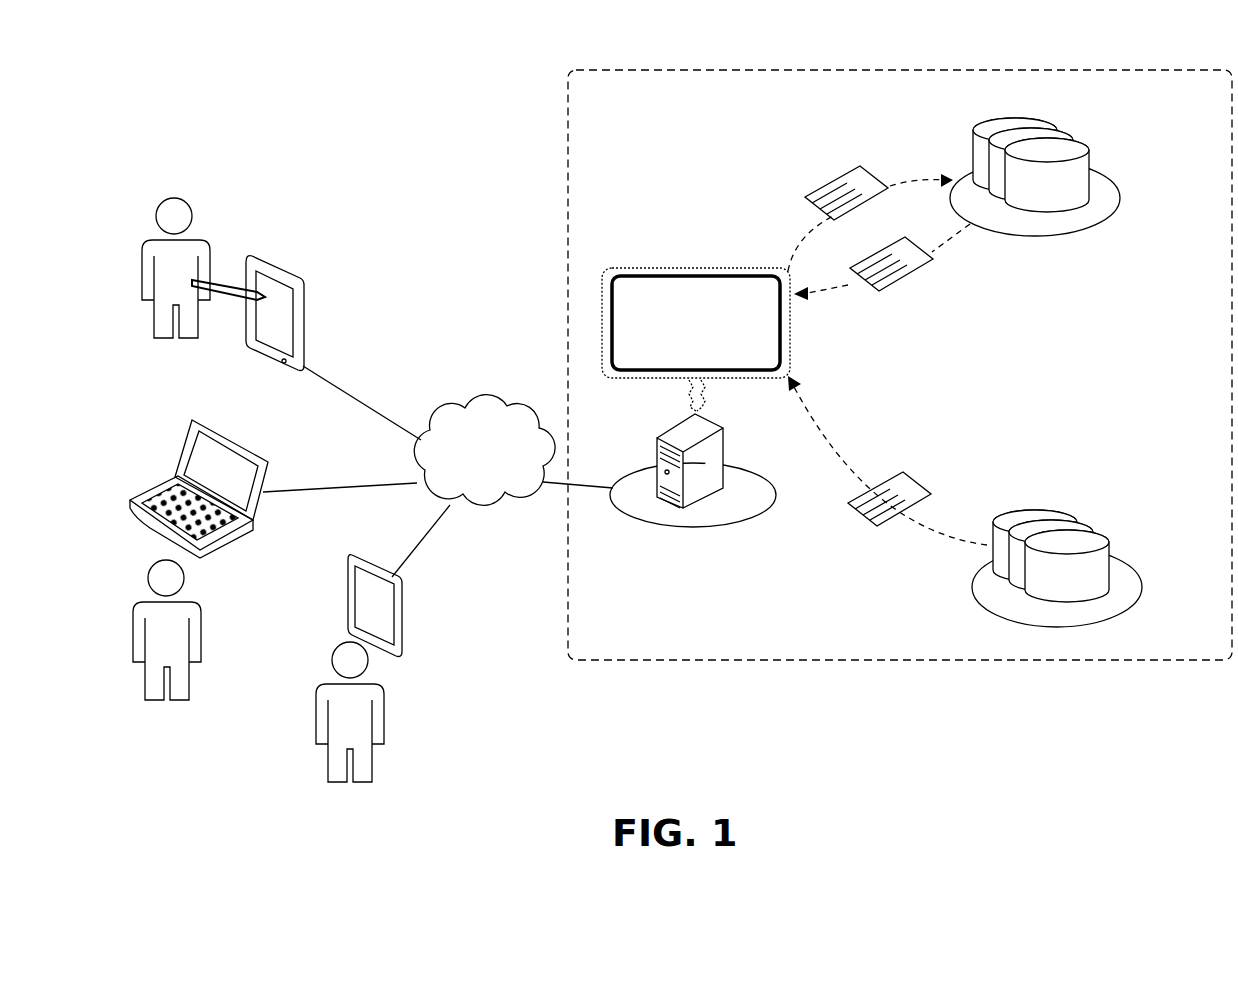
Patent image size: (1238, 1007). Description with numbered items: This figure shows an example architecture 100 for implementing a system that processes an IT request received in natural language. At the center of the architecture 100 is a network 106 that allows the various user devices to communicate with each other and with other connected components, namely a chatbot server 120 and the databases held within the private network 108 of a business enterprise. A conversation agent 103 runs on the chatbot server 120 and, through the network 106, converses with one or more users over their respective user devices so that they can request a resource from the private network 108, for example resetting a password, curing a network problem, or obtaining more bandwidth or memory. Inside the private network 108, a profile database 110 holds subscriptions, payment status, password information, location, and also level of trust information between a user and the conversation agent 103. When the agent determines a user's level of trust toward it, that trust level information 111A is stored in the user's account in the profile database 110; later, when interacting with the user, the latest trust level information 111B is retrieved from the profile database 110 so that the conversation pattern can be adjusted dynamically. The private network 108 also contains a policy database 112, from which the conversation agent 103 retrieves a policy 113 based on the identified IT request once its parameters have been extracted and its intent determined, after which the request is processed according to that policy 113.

The architecture 100 is at (284, 68).
The conversation agent 103 is at (696, 339).
The network 106 is at (443, 414).
The private network 108 is at (900, 365).
The profile database 110 is at (1103, 172).
The trust level information 111A is at (840, 178).
The latest trust level information 111B is at (925, 284).
The policy database 112 is at (1135, 578).
The policy 113 is at (915, 472).
The chatbot server 120 is at (657, 440).